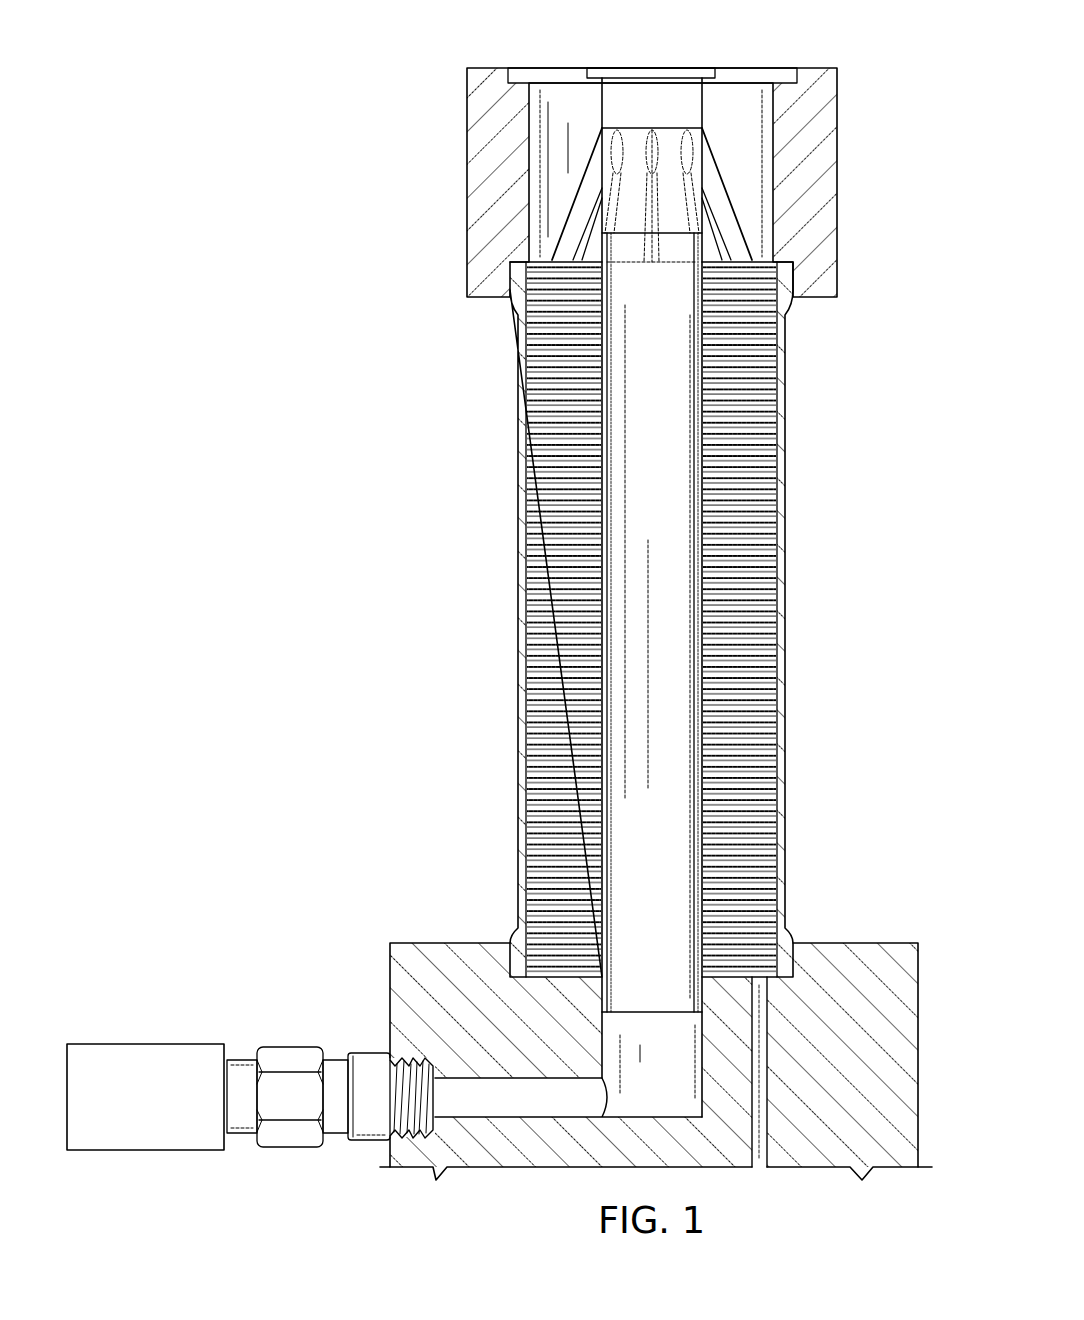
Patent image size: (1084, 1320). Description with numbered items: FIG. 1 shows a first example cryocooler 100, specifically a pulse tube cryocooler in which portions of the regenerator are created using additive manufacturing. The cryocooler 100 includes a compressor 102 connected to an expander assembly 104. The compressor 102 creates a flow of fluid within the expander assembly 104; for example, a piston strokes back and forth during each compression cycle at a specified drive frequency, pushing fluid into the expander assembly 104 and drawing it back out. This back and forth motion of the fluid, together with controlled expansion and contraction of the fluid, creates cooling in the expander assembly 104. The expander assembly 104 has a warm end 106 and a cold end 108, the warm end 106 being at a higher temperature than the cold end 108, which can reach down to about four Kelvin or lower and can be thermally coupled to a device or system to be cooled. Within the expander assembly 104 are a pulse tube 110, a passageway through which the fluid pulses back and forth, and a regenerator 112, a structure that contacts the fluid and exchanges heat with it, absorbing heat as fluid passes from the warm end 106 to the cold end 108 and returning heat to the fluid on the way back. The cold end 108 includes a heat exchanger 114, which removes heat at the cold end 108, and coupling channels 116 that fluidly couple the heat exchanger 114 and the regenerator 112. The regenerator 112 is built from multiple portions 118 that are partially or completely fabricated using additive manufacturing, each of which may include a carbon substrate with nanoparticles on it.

The cryocooler 100 is at (384, 56).
The compressor 102 is at (145, 1150).
The expander assembly 104 is at (486, 496).
The warm end 106 is at (808, 914).
The cold end 108 is at (558, 67).
The pulse tube 110 is at (695, 907).
The regenerator 112 is at (517, 870).
The heat exchanger 114 is at (665, 150).
The coupling channels 116 is at (738, 218).
The portions 118 is at (505, 753).